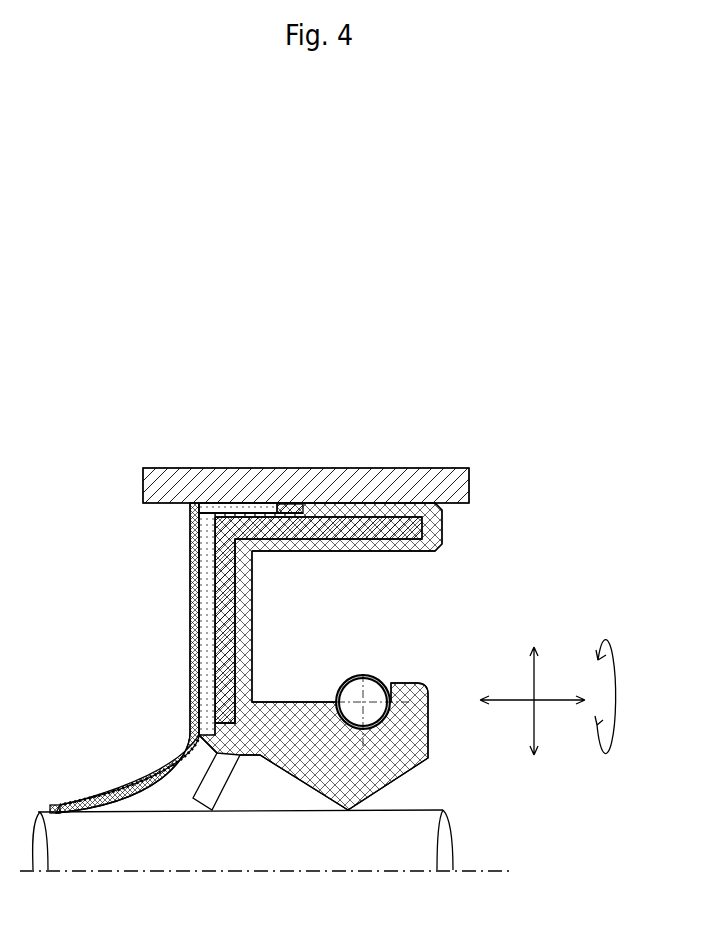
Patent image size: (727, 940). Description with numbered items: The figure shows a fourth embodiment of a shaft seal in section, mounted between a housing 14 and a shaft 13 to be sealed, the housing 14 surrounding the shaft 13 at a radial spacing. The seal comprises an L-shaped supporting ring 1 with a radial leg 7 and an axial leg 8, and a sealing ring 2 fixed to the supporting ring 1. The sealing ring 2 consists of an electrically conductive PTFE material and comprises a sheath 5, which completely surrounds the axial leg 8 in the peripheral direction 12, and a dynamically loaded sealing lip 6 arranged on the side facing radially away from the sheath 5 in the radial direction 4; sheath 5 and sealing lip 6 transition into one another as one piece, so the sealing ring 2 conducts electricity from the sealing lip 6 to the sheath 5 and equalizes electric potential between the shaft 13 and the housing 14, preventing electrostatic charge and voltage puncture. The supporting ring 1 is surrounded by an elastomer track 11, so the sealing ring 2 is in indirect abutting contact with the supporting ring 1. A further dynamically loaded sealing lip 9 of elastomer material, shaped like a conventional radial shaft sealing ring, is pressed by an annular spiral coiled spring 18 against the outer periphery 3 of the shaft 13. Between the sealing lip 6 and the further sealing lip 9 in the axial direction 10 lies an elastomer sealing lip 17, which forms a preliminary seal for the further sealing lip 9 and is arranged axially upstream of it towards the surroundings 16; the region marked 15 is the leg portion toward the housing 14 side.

The supporting ring 1 is at (227, 662).
The sealing ring 2 is at (175, 763).
The outer periphery 3 is at (248, 514).
The radial direction 4 is at (533, 685).
The sheath 5 is at (289, 506).
The dynamically loaded sealing lip 6 is at (57, 808).
The radial leg 7 is at (222, 620).
The axial leg 8 is at (376, 520).
The further dynamically loaded sealing lip 9 is at (390, 757).
The axial direction 10 is at (558, 700).
The elastomer track 11 is at (207, 589).
The peripheral direction 12 is at (614, 720).
The shaft 13 is at (273, 852).
The housing 14 is at (210, 485).
The radial leg 15 is at (413, 580).
The surroundings 16 is at (107, 623).
The elastomer sealing lip 17 is at (210, 790).
The annular spiral coiled spring 18 is at (362, 674).